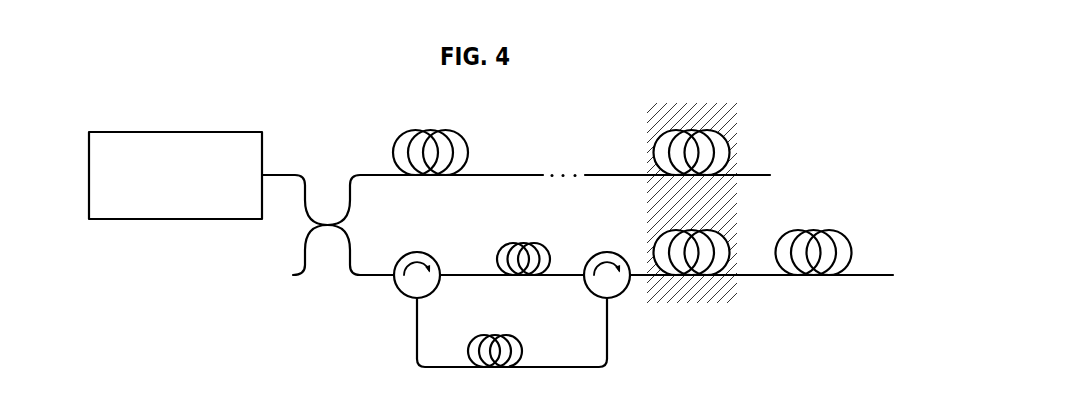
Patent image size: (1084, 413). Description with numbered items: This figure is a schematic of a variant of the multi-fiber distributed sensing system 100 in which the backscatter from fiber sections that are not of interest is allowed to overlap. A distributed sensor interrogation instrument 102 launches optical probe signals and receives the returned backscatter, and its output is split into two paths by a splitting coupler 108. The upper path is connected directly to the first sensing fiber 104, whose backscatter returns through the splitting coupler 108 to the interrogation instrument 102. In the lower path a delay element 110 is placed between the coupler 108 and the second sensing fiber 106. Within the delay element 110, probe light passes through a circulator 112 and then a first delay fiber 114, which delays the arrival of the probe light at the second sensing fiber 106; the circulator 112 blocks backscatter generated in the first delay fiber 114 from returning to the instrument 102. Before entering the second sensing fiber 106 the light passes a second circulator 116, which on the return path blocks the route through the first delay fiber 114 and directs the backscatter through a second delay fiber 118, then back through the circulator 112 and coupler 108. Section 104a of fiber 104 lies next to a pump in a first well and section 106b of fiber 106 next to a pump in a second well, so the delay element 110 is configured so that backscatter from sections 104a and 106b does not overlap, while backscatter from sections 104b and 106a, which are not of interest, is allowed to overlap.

The multi-fiber distributed sensing system 100 is at (795, 112).
The distributed sensor interrogation instrument 102 is at (158, 131).
The first sensing fiber 104 is at (755, 173).
The section of first sensing fiber 104a is at (457, 132).
The section of first sensing fiber 104b is at (658, 133).
The second sensing fiber 106 is at (870, 273).
The section of second sensing fiber 106a is at (720, 231).
The section of second sensing fiber 106b is at (812, 230).
The splitting coupler 108 is at (328, 205).
The delay element 110 is at (392, 338).
The circulator 112 is at (417, 253).
The first delay fiber 114 is at (522, 243).
The second circulator 116 is at (607, 253).
The second delay fiber 118 is at (493, 337).